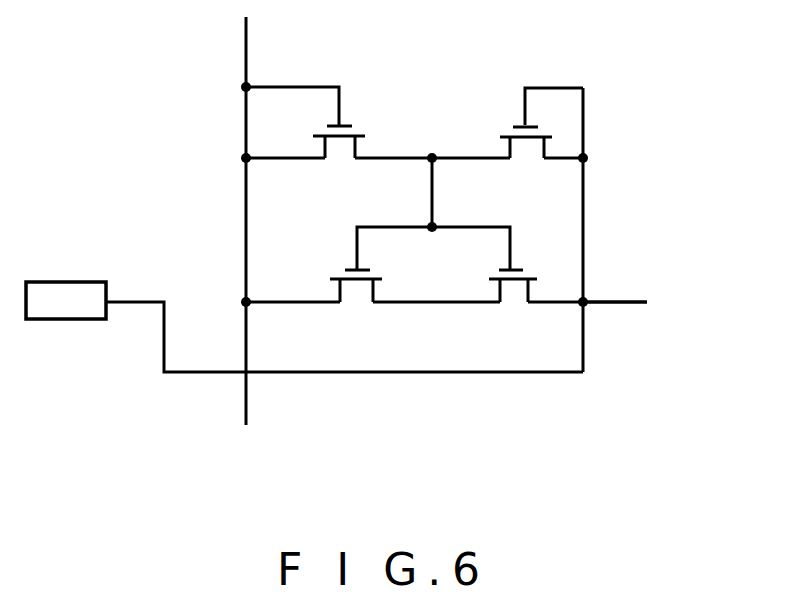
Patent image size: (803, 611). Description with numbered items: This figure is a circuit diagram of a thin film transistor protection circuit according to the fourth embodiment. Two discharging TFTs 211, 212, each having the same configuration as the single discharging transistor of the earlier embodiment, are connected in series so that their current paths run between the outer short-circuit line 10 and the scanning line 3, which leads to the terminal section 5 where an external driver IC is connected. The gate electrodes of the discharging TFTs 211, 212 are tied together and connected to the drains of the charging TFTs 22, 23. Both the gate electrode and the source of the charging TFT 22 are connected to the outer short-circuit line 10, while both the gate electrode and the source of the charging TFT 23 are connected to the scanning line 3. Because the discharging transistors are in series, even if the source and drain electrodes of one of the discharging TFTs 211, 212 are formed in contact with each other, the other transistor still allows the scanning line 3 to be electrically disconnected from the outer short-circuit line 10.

The outer short-circuit line 10 is at (246, 42).
The charging TFT 22 is at (340, 161).
The charging TFT 23 is at (528, 162).
The discharging TFT 211 is at (358, 305).
The discharging TFT 212 is at (514, 305).
The scanning line 3 is at (608, 300).
The terminal section 5 is at (66, 307).